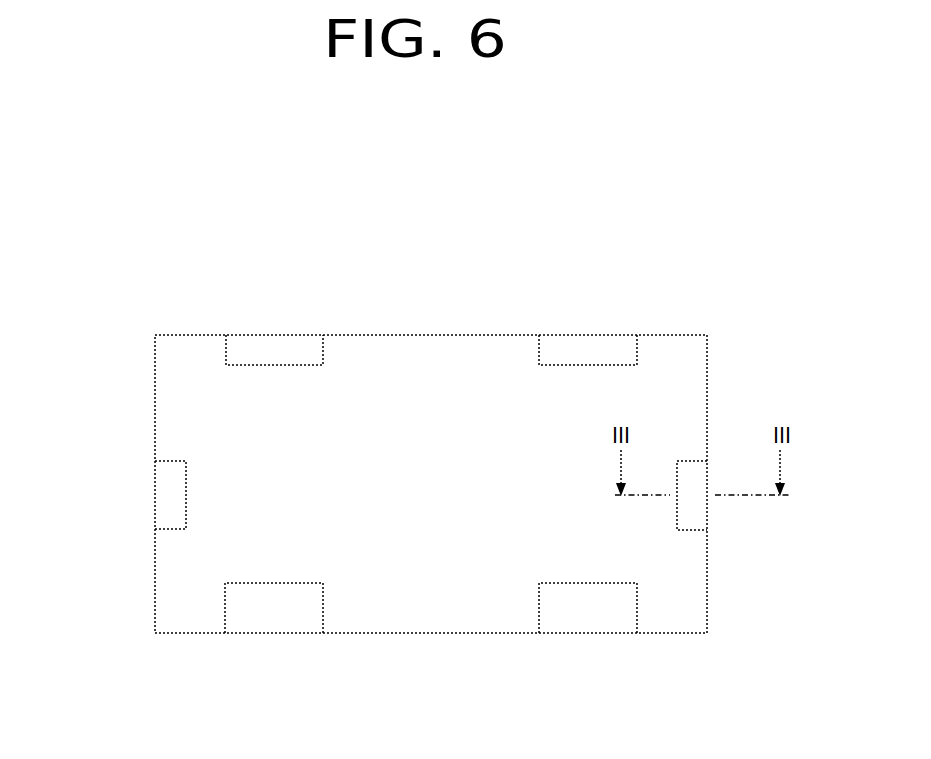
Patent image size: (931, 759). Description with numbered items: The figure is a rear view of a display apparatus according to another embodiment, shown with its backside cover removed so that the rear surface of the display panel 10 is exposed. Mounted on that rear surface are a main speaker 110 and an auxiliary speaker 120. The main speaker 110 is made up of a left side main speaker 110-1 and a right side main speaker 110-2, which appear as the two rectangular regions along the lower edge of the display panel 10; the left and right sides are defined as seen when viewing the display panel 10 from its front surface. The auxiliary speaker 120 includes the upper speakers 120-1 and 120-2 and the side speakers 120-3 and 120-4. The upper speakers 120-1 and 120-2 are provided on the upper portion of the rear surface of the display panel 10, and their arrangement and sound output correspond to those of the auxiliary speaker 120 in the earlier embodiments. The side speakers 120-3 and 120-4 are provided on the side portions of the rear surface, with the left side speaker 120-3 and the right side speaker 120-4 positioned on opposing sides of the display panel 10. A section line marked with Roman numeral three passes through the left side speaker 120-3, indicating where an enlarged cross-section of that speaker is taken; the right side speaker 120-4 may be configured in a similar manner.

The display panel 10 is at (707, 358).
The auxiliary speaker 120 is at (532, 290).
The upper speaker 120-1 is at (547, 343).
The upper speaker 120-2 is at (262, 343).
The left side speaker 120-3 is at (693, 513).
The right side speaker 120-4 is at (165, 513).
The main speaker 110 is at (535, 680).
The left side main speaker 110-1 is at (545, 628).
The right side main speaker 110-2 is at (260, 625).